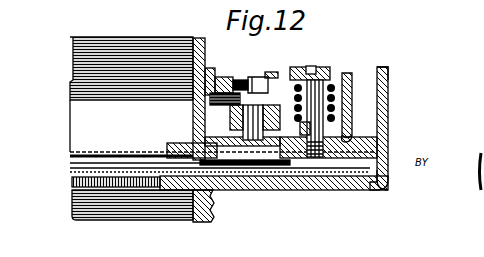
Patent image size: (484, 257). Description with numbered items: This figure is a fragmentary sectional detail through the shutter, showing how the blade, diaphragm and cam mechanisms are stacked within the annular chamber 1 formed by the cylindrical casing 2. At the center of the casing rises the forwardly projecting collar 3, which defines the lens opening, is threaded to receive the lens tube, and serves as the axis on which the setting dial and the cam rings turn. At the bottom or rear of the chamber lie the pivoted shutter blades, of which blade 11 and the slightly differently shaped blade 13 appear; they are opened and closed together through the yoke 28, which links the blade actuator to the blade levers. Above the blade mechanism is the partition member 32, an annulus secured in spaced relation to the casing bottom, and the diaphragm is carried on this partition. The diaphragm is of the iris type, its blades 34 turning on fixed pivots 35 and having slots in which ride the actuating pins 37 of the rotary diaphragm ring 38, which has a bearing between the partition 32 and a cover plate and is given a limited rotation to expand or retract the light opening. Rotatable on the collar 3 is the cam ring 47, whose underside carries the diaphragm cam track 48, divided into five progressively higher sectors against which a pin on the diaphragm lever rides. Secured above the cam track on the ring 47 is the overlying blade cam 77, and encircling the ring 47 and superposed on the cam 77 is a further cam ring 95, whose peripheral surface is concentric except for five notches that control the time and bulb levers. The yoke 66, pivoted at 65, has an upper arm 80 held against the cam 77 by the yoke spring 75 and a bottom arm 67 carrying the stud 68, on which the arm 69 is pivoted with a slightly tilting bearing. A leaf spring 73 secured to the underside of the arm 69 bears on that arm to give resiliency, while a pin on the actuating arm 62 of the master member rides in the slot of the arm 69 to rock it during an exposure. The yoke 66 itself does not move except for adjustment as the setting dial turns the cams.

The annular chamber 1 is at (347, 190).
The cylindrical casing 2 is at (388, 100).
The collar 3 is at (196, 38).
The blade 11 is at (367, 189).
The blade 13 is at (72, 181).
The yoke 28 is at (273, 190).
The partition member 32 is at (377, 146).
The diaphragm blades 34 is at (88, 152).
The fixed pivots 35 is at (212, 190).
The actuating pins 37 is at (254, 190).
The rotary diaphragm ring 38 is at (167, 148).
The cam ring 47 is at (208, 55).
The cam track 48 is at (252, 75).
The actuating arm 62 is at (193, 106).
The pivot 65 is at (320, 79).
The yoke 66 is at (388, 80).
The bottom arm 67 is at (386, 128).
The stud 68 is at (266, 104).
The arm 69 is at (215, 138).
The leaf spring 73 is at (217, 127).
The yoke spring 75 is at (353, 87).
The cam 77 is at (230, 76).
The upper arm 80 is at (277, 72).
The cam ring 95 is at (226, 63).